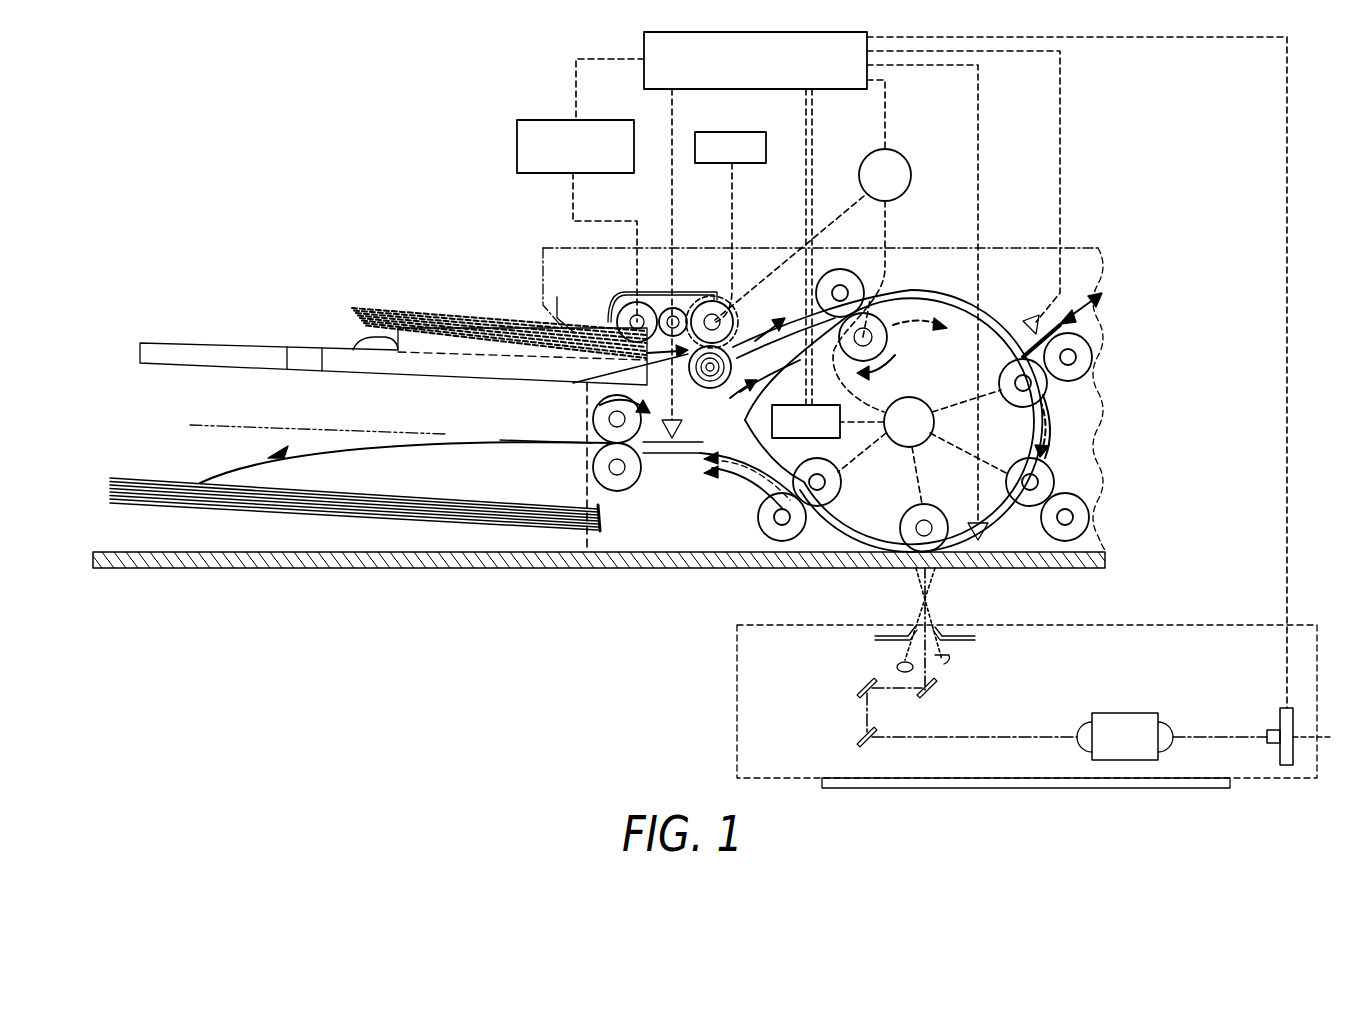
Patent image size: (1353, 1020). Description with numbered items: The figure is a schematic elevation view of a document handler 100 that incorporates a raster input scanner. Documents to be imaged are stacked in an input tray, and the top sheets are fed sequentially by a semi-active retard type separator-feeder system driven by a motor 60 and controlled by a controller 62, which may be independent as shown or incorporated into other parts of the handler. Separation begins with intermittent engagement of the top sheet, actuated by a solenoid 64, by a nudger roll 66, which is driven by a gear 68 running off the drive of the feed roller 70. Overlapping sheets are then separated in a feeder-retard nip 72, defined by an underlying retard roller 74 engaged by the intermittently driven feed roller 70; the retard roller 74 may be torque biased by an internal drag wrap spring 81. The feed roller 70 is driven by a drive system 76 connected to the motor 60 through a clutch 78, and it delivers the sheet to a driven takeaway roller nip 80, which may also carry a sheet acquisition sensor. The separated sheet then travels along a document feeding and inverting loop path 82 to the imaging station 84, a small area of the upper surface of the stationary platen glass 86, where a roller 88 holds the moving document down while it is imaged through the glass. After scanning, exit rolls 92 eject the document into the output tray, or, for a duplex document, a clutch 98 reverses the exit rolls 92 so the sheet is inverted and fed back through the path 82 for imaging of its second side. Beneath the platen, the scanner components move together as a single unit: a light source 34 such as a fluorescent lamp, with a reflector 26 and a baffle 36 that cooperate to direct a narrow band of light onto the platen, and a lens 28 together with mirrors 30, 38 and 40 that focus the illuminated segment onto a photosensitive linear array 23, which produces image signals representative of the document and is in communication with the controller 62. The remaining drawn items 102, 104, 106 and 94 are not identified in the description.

The document handler 100 is at (427, 138).
The controller 62 is at (747, 89).
The solenoid 64 is at (548, 120).
The clutch 78 is at (748, 163).
The motor 60 is at (885, 175).
The pick mechanism 106 is at (695, 278).
The media stack 104 is at (360, 306).
The input tray 102 is at (337, 343).
The nudger roll 66 is at (624, 308).
The gear 68 is at (668, 306).
The feed roller 70 is at (728, 312).
The drive system 76 is at (740, 309).
The feeder-retard nip 72 is at (573, 383).
The retard roller 74 is at (687, 411).
The exit rolls 92 is at (593, 420).
The internal drag wrap spring 81 is at (710, 388).
The driven takeaway roller nip 80 is at (845, 355).
The clutch 98 is at (843, 405).
The drive motor 94 is at (923, 447).
The document feeding and inverting loop path 82 is at (1058, 441).
The roller 88 is at (935, 505).
The stationary platen glass 86 is at (896, 578).
The imaging station 84 is at (958, 578).
The light source 34 is at (899, 665).
The baffle 36 is at (966, 640).
The reflector 26 is at (945, 665).
The mirror 30 is at (860, 688).
The mirror 38 is at (929, 692).
The mirror 40 is at (862, 740).
The lens 28 is at (1123, 713).
The photosensitive linear array 23 is at (1280, 712).